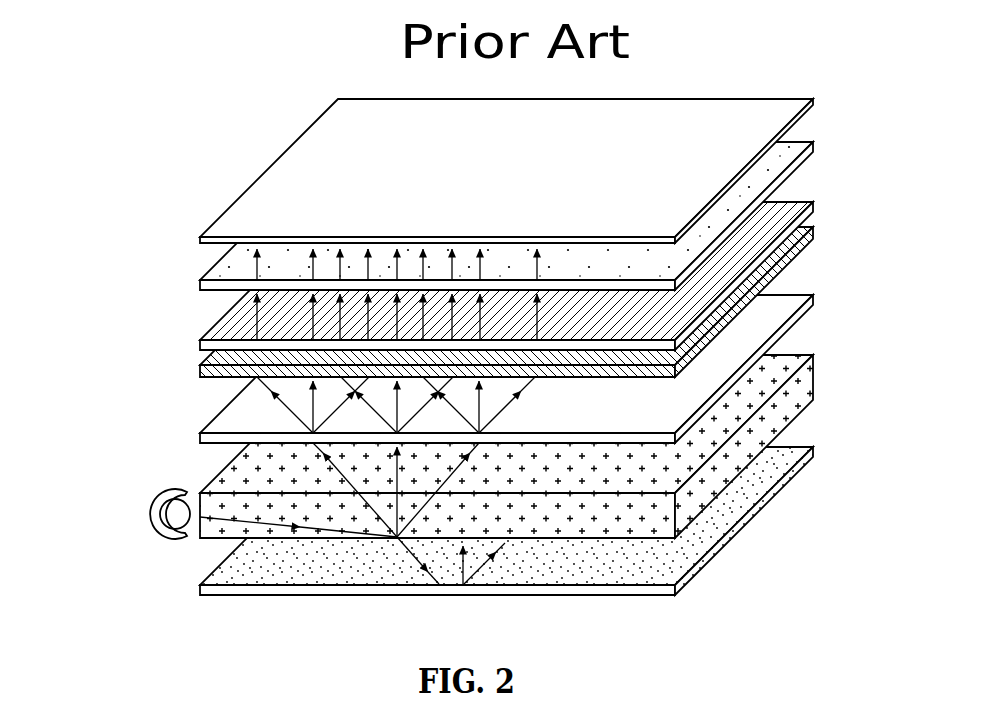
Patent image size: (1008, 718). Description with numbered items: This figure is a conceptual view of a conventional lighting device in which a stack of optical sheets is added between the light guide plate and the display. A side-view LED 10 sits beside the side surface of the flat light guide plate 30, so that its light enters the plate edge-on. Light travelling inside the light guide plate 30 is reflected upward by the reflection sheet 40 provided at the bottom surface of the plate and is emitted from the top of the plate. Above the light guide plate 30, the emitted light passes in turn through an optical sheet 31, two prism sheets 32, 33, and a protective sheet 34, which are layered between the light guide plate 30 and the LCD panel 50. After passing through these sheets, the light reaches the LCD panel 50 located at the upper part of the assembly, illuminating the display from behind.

The side-view LED 10 is at (150, 517).
The light guide plate 30 is at (813, 380).
The optical sheet 31 is at (813, 296).
The prism sheet 32 is at (813, 228).
The prism sheet 33 is at (813, 202).
The protective sheet 34 is at (813, 142).
The reflection sheet 40 is at (803, 463).
The LCD panel 50 is at (813, 97).